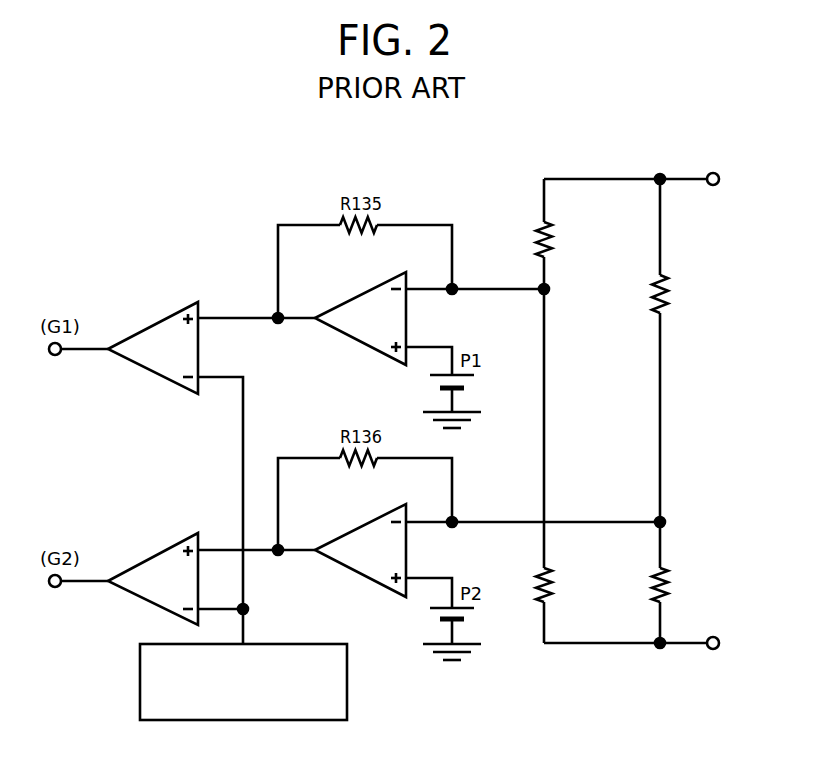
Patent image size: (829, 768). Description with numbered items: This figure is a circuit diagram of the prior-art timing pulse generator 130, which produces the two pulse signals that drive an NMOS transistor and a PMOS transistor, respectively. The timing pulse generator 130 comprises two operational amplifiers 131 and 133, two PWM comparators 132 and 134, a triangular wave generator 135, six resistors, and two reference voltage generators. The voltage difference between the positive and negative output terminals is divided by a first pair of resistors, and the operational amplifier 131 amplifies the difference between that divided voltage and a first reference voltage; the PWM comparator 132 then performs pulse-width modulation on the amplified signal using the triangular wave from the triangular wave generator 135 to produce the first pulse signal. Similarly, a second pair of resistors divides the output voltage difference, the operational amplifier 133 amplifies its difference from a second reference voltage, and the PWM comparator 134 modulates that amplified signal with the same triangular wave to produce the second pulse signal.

The timing pulse generator 130 is at (512, 165).
The operational amplifier 131 is at (362, 290).
The PWM comparator 132 is at (159, 320).
The operational amplifier 133 is at (362, 522).
The PWM comparator 134 is at (159, 551).
The triangular wave generator 135 is at (348, 671).